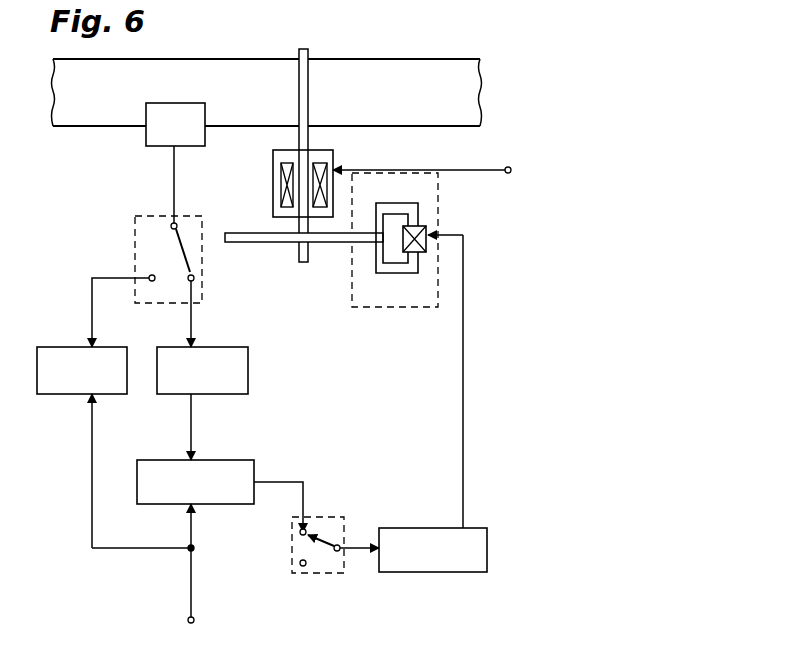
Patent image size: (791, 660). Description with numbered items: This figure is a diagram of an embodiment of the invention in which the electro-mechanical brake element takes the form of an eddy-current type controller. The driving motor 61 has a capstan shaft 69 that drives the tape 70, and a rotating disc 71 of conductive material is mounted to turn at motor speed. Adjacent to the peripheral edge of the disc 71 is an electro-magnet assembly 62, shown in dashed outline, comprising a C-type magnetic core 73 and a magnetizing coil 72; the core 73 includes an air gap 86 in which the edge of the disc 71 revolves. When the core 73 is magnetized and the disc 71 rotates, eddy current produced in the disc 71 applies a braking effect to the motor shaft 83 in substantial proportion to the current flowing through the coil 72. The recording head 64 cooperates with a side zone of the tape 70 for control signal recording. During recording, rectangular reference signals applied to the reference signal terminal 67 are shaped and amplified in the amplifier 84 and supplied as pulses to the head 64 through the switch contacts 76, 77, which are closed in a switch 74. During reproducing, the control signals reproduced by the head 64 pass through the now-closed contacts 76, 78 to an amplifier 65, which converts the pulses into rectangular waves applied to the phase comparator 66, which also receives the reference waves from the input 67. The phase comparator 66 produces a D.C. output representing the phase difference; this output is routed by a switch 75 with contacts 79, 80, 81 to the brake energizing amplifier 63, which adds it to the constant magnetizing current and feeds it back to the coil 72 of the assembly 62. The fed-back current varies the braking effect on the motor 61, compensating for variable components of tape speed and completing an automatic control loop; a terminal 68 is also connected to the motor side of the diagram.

The driving motor 61 is at (333, 155).
The electro-magnet assembly 62 is at (438, 178).
The brake energizing amplifier 63 is at (444, 572).
The recording head 64 is at (153, 146).
The amplifier 65 is at (235, 394).
The phase comparator 66 is at (252, 466).
The reference signal terminal 67 is at (186, 622).
The terminal 68 is at (508, 167).
The capstan shaft 69 is at (308, 52).
The tape 70 is at (233, 68).
The rotating disc 71 is at (332, 242).
The magnetizing coil 72 is at (428, 232).
The C-type magnetic core 73 is at (398, 273).
The switch 74 is at (203, 298).
The switch 75 is at (313, 573).
The switch contact 76 is at (180, 236).
The switch contact 77 is at (148, 274).
The switch contact 78 is at (195, 278).
The switch contact 79 is at (336, 541).
The switch contact 80 is at (300, 563).
The switch contact 81 is at (306, 528).
The motor shaft 83 is at (281, 175).
The amplifier 84 is at (48, 394).
The air gap 86 is at (378, 253).